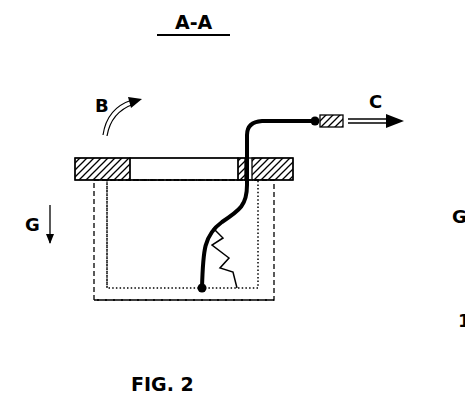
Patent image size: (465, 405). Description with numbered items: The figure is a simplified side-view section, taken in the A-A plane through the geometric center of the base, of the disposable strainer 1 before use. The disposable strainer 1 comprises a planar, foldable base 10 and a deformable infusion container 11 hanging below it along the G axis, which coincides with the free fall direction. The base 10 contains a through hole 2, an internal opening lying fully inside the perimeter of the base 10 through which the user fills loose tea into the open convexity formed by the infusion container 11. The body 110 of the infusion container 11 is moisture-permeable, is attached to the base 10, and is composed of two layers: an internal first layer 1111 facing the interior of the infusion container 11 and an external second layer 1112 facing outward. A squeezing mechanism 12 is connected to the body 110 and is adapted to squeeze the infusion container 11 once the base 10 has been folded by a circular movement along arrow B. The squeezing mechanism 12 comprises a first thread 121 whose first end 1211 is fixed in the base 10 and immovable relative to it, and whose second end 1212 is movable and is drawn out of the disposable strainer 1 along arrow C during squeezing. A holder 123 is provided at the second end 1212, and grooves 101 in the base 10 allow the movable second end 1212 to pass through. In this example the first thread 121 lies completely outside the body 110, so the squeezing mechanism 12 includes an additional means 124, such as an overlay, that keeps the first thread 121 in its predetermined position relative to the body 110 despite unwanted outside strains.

The disposable strainer 1 is at (257, 183).
The base 10 is at (84, 157).
The through hole 2 is at (184, 169).
The grooves 101 is at (241, 156).
The infusion container 11 is at (143, 204).
The body 110 is at (99, 291).
The first layer 1111 is at (109, 226).
The second layer 1112 is at (157, 302).
The squeezing mechanism 12 is at (257, 150).
The first thread 121 is at (257, 123).
The first end 1211 is at (200, 284).
The second end 1212 is at (314, 128).
The holder 123 is at (330, 130).
The additional means 124 is at (233, 253).